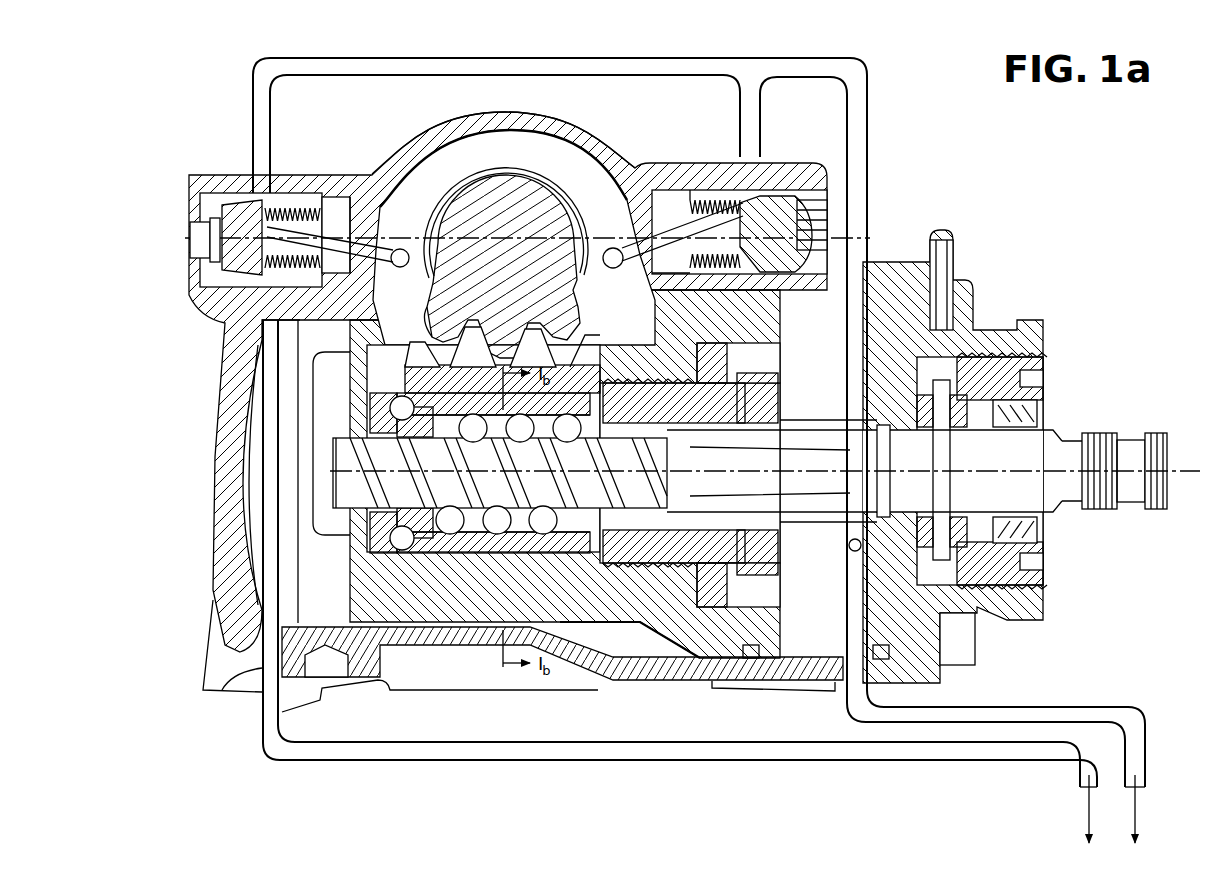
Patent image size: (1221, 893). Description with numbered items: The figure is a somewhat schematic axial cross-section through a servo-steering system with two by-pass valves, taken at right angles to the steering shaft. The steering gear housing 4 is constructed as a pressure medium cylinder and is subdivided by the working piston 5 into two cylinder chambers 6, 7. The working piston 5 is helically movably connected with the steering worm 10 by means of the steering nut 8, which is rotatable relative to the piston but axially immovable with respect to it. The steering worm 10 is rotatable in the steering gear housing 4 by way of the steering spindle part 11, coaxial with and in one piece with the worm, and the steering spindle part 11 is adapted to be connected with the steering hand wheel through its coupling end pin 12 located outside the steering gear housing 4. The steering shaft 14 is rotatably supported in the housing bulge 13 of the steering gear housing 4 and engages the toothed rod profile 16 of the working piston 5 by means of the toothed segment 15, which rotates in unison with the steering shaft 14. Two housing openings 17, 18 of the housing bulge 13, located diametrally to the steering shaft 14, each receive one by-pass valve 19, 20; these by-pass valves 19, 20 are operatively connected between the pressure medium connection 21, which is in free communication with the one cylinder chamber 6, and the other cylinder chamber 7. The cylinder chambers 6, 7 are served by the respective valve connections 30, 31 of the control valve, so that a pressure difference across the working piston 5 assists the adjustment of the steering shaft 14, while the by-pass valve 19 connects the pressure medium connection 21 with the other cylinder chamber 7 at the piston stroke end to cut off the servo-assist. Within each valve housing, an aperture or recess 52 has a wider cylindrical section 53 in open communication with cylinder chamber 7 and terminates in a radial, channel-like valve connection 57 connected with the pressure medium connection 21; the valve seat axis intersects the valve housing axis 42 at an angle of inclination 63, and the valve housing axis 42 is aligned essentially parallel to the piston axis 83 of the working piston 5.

The steering gear housing 4 is at (957, 222).
The working piston 5 is at (697, 640).
The cylinder chamber 6 is at (850, 330).
The cylinder chamber 7 is at (283, 373).
The steering nut 8 is at (463, 540).
The steering worm 10 is at (357, 490).
The steering spindle part 11 is at (1023, 450).
The coupling end pin 12 is at (1133, 447).
The housing bulge 13 is at (597, 140).
The steering shaft 14 is at (457, 187).
The toothed segment 15 is at (547, 292).
The toothed rod profile 16 is at (460, 327).
The housing opening 17 is at (350, 207).
The housing opening 18 is at (675, 200).
The by-pass valve 19 is at (466, 223).
The by-pass valve 20 is at (833, 210).
The pressure medium connection 21 is at (873, 100).
The valve connection 30 is at (1137, 802).
The valve connection 31 is at (1087, 802).
The valve housing axis 42 is at (643, 233).
The aperture or recess 52 is at (257, 260).
The wider cylindrical section 53 is at (650, 262).
The valve connection 57 is at (245, 203).
The angle of inclination 63 is at (372, 262).
The piston axis 83 is at (1042, 500).